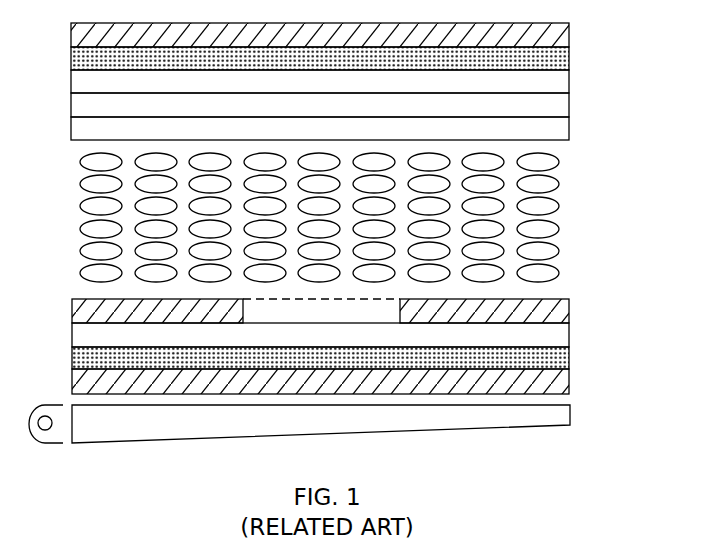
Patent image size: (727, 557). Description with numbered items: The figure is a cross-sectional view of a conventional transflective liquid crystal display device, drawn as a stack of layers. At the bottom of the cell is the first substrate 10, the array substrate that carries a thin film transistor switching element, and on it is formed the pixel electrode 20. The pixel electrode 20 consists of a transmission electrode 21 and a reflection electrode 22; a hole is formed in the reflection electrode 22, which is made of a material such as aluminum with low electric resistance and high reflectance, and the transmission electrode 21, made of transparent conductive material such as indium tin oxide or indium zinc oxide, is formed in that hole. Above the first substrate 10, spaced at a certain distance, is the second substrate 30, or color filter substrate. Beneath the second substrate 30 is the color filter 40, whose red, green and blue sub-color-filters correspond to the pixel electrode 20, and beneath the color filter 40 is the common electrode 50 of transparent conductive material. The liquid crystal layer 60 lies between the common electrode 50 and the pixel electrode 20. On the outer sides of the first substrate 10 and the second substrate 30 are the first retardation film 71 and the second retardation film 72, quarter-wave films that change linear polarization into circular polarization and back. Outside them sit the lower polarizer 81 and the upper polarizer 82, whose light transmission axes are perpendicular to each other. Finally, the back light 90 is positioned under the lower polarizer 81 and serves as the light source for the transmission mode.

The first substrate 10 is at (557, 342).
The pixel electrode 20 is at (383, 296).
The transmission electrode 21 is at (373, 312).
The reflection electrode 22 is at (560, 310).
The second substrate 30 is at (557, 88).
The color filter 40 is at (555, 112).
The common electrode 50 is at (555, 137).
The liquid crystal layer 60 is at (557, 197).
The first retardation film 71 is at (560, 361).
The second retardation film 72 is at (557, 63).
The lower polarizer 81 is at (560, 381).
The upper polarizer 82 is at (557, 42).
The back light 90 is at (583, 404).